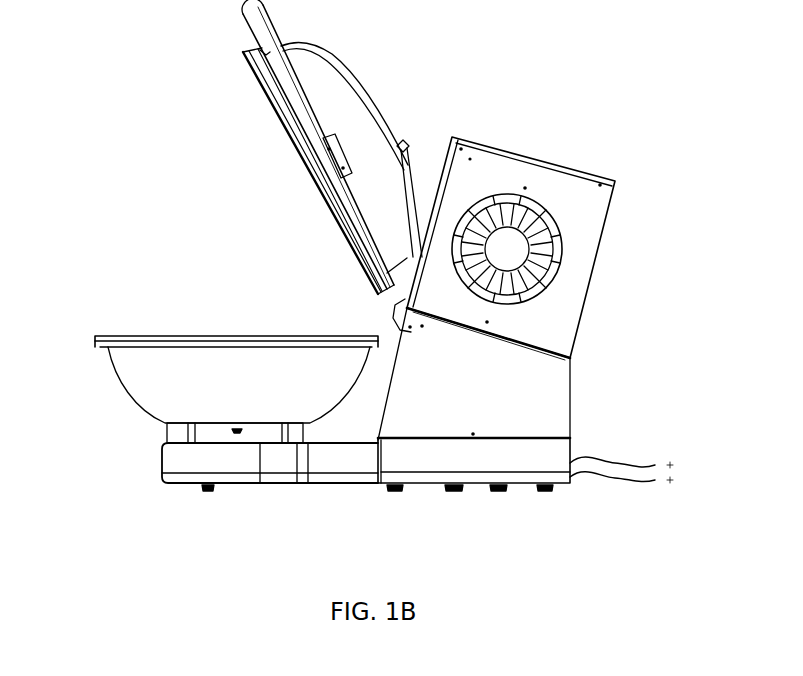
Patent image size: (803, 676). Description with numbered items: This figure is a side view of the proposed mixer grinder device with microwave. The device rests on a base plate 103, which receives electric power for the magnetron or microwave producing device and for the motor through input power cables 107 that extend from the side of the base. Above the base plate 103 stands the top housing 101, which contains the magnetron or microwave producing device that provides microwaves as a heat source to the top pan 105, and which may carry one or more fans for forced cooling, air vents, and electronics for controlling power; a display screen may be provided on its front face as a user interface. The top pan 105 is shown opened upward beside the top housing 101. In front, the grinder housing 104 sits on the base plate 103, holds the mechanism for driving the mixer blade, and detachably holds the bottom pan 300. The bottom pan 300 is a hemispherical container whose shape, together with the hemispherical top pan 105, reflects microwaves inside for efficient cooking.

The top housing 101 is at (555, 185).
The base plate 103 is at (537, 478).
The grinder housing 104 is at (213, 460).
The top pan 105 is at (348, 128).
The input power cables 107 is at (620, 490).
The bottom pan 300 is at (157, 387).